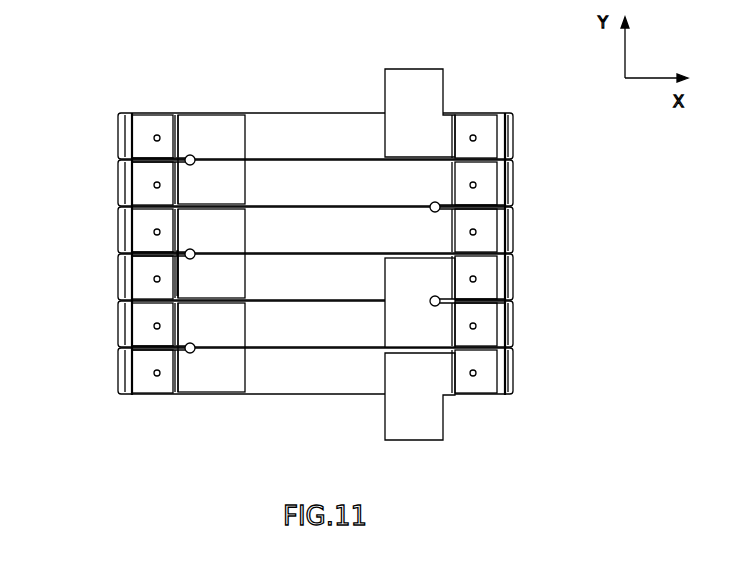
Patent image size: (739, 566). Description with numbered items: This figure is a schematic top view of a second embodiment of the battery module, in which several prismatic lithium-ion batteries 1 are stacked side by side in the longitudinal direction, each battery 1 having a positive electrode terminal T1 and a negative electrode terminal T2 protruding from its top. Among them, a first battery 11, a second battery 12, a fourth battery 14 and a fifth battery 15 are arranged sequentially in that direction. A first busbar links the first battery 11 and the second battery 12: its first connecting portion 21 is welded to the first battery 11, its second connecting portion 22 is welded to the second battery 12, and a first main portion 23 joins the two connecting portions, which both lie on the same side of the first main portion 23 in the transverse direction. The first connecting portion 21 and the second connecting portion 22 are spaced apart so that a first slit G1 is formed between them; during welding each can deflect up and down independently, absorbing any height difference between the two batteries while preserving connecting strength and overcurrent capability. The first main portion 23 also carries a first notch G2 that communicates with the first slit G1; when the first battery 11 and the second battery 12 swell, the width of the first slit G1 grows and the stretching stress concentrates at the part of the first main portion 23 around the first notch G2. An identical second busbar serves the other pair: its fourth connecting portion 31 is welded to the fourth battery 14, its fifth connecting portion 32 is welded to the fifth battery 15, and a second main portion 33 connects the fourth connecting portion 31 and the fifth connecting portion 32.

The battery 1 is at (118, 140).
The first battery 11 is at (118, 378).
The second battery 12 is at (118, 327).
The fourth battery 14 is at (118, 280).
The fifth battery 15 is at (118, 232).
The first connecting portion 21 is at (157, 388).
The second connecting portion 22 is at (165, 327).
The first main portion 23 is at (235, 359).
The fourth connecting portion 31 is at (160, 290).
The fifth connecting portion 32 is at (163, 230).
The second main portion 33 is at (225, 256).
The first slit G1 is at (148, 349).
The first notch G2 is at (193, 353).
The positive electrode terminal T1 is at (505, 144).
The negative electrode terminal T2 is at (505, 191).